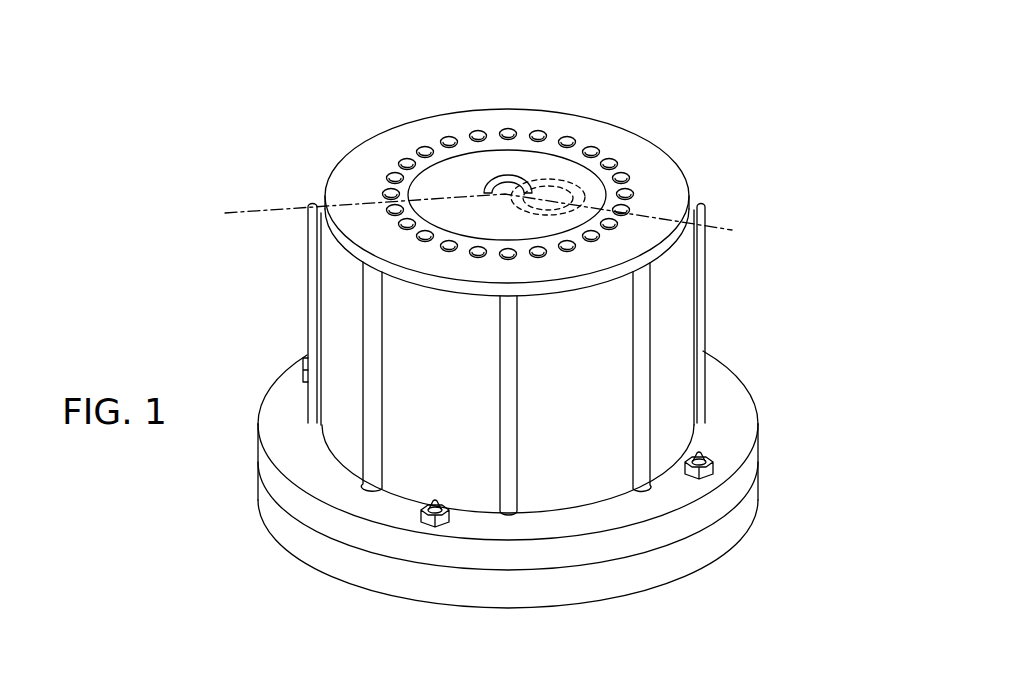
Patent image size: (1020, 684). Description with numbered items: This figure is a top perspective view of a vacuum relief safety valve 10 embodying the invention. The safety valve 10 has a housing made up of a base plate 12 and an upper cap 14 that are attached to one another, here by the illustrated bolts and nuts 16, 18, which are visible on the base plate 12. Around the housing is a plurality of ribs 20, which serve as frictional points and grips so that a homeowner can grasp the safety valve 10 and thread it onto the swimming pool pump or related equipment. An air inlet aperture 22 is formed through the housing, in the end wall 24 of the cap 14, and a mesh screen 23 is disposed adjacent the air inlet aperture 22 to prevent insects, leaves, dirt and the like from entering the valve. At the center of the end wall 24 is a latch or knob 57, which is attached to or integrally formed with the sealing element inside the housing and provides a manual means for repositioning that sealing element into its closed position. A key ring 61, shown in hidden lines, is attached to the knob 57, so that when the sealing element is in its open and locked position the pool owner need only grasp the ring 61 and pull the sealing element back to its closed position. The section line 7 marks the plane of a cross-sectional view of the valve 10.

The vacuum relief safety valve 10 is at (225, 125).
The base plate 12 is at (293, 540).
The upper cap 14 is at (668, 148).
The bolts 16 is at (440, 527).
The nuts 18 is at (699, 465).
The ribs 20 is at (640, 457).
The air inlet aperture 22 is at (452, 175).
The mesh screen 23 is at (442, 138).
The end wall 24 is at (513, 109).
The latch or knob 57 is at (501, 176).
The key ring 61 is at (560, 180).
The section line 7- 7 is at (190, 170).